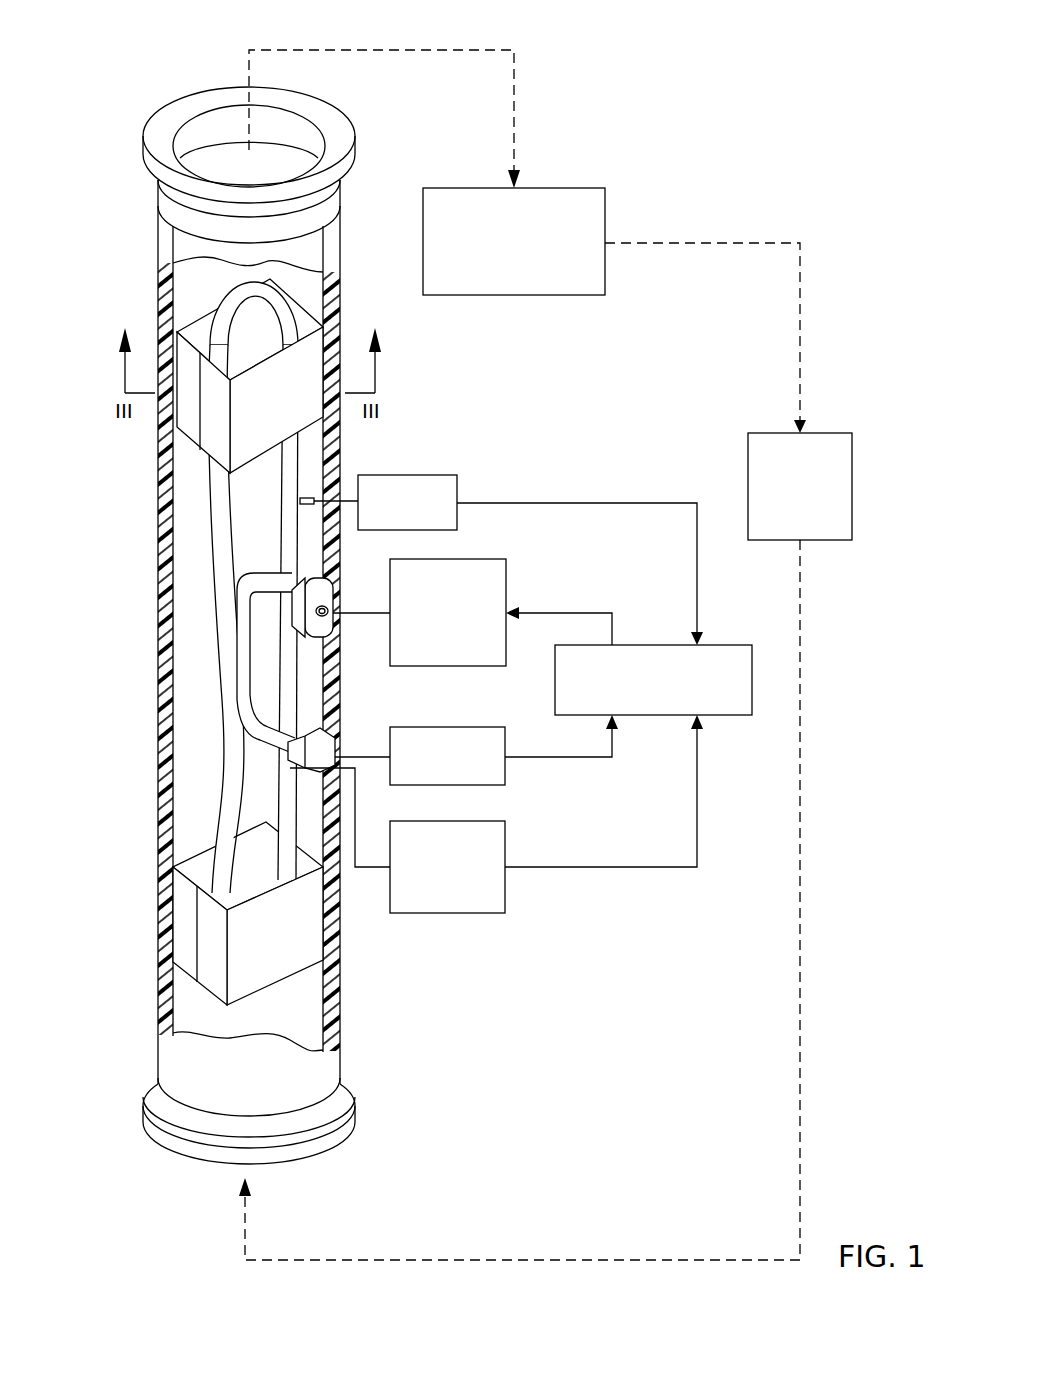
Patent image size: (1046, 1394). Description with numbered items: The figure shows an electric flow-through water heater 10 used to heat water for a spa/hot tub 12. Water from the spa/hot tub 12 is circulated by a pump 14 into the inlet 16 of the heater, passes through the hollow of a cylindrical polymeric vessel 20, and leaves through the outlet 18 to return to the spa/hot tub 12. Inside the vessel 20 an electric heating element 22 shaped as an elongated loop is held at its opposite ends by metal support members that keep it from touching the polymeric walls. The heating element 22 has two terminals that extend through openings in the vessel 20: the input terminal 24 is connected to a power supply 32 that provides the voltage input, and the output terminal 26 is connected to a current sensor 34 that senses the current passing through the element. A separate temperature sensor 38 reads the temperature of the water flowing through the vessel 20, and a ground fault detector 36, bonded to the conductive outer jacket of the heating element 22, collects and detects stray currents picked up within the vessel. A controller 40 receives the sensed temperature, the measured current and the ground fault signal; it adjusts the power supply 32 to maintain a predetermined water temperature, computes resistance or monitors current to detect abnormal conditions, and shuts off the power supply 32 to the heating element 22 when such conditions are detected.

The electric flow-through water heater 10 is at (93, 214).
The spa/hot tub 12 is at (568, 188).
The pump 14 is at (828, 433).
The inlet 16 is at (245, 1230).
The outlet 18 is at (246, 72).
The vessel 20 is at (163, 739).
The electric heating element 22 is at (212, 533).
The input terminal 24 is at (333, 607).
The output terminal 26 is at (335, 752).
The power supply 32 is at (483, 559).
The current sensor 34 is at (445, 727).
The ground fault detector 36 is at (500, 821).
The temperature sensor 38 is at (430, 475).
The controller 40 is at (730, 645).